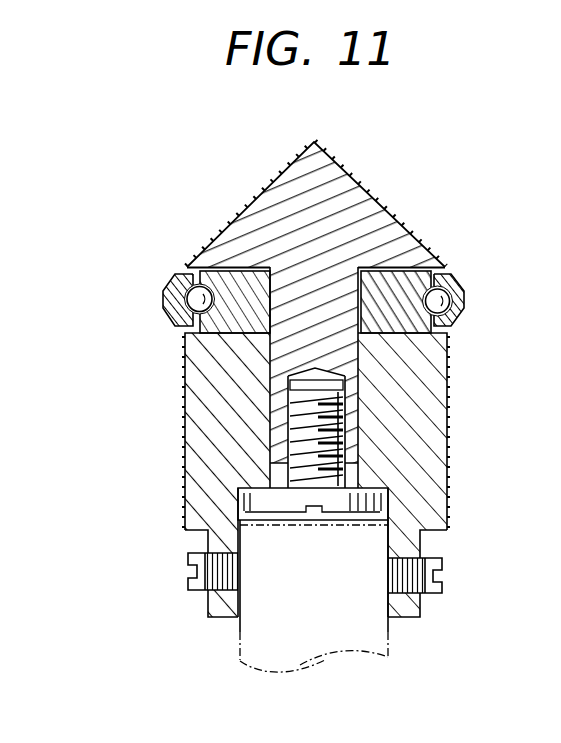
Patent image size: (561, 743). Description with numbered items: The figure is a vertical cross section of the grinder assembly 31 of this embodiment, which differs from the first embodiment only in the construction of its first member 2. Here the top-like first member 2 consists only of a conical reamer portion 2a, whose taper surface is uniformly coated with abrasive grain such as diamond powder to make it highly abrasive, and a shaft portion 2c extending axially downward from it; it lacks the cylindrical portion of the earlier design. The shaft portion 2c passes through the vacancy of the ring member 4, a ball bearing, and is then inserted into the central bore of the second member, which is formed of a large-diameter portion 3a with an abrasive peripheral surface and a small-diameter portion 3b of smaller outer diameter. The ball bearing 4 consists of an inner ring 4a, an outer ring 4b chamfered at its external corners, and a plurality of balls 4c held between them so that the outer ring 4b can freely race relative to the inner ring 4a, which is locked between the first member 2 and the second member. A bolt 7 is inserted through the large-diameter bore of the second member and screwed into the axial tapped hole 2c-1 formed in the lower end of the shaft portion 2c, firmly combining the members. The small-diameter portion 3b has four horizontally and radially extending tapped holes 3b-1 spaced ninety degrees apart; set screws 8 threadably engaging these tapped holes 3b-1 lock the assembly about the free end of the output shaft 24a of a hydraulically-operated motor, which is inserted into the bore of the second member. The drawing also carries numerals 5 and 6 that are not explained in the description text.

The grinder assembly 31 is at (416, 206).
The conical head surface 5 is at (250, 204).
The first member 2 is at (521, 222).
The conical reamer portion 2a is at (412, 242).
The shaft portion 2c is at (358, 348).
The tapped hole 2c-1 is at (346, 418).
The ring member 4 is at (78, 250).
The inner ring 4a is at (165, 326).
The outer ring 4b is at (168, 280).
The balls 4c is at (165, 299).
The large-diameter portion 3a is at (185, 468).
The small-diameter portion 3b is at (205, 540).
The tapped holes 3b-1 is at (216, 600).
The external thread 6 is at (447, 471).
The bolt 7 is at (288, 508).
The set screws 8 is at (188, 571).
The output shaft 24a is at (390, 630).